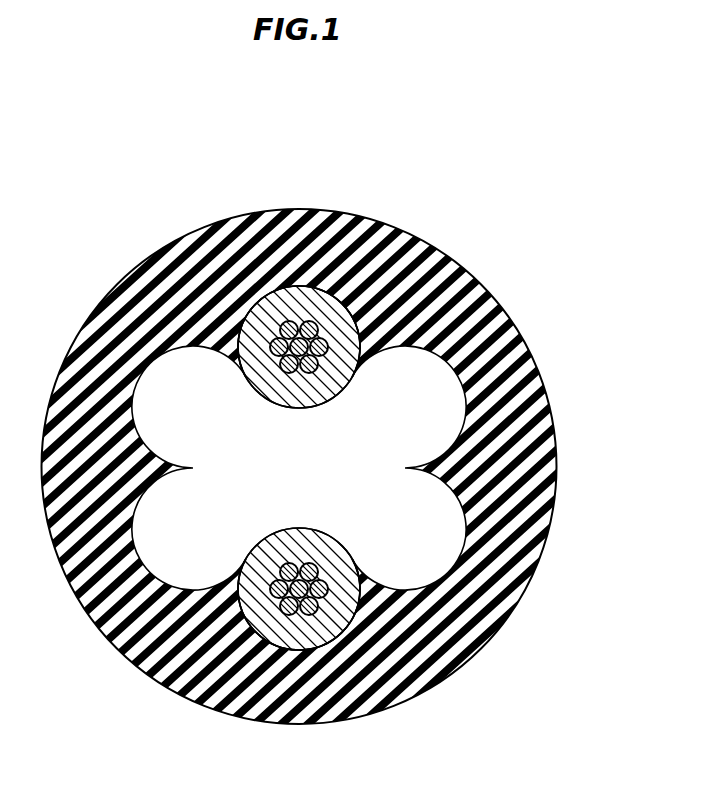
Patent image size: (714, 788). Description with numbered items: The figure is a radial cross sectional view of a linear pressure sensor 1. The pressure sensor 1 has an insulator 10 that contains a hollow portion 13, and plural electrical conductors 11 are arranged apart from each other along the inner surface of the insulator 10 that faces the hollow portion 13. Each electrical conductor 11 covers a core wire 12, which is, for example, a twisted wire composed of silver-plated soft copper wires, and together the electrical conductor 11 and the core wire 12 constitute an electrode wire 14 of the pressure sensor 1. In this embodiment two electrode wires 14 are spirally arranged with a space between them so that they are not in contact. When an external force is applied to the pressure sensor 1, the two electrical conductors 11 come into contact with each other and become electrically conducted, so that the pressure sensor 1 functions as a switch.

The pressure sensor 1 is at (570, 211).
The insulator 10 is at (512, 350).
The electrical conductor 11 is at (305, 300).
The core wire 12 is at (291, 371).
The hollow portion 13 is at (168, 382).
The electrode wire 14 is at (347, 393).